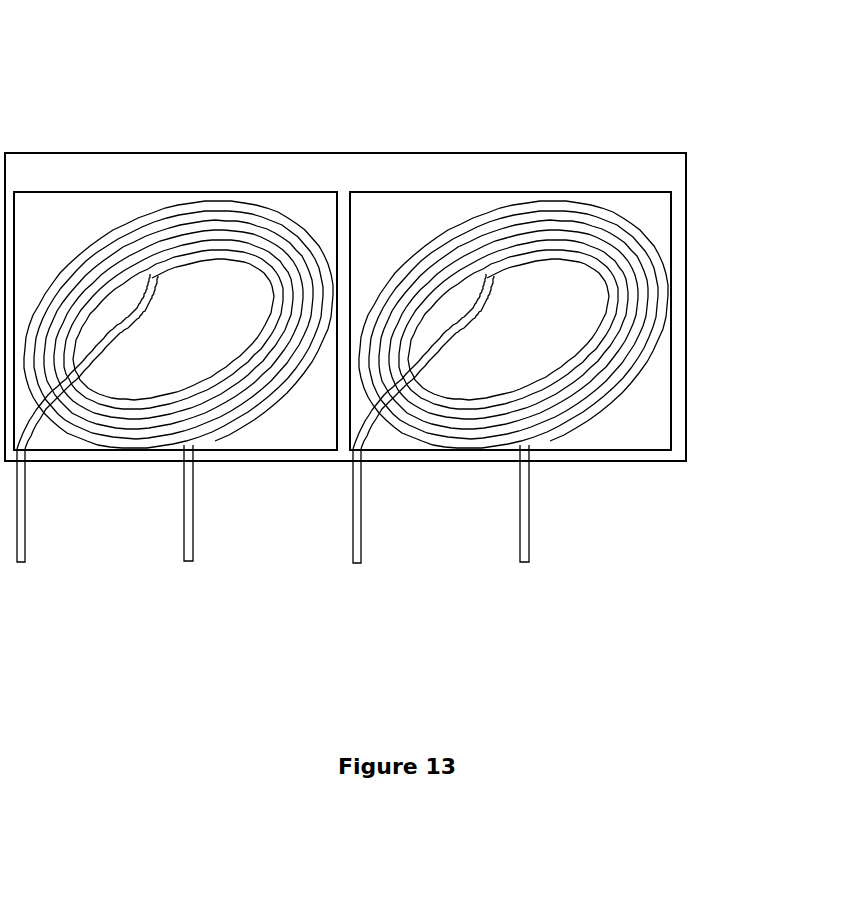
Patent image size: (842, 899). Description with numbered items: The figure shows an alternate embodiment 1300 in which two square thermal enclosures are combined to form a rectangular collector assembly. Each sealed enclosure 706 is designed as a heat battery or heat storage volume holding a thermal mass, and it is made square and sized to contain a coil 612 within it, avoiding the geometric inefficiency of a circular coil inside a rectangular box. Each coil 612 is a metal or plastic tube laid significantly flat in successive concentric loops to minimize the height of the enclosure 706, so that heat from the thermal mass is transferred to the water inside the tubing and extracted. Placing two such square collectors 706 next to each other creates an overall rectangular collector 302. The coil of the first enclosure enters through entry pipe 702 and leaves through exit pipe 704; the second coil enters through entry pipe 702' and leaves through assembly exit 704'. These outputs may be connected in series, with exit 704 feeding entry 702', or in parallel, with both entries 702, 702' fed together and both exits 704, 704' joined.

The alternate embodiment 1300 is at (430, 100).
The collector 302 is at (165, 147).
The enclosure 706 is at (413, 185).
The coil 612 is at (346, 369).
The entry pipe 702 is at (87, 481).
The exit pipe 704 is at (225, 577).
The entry pipe 702' is at (423, 487).
The assembly exit pipe 704' is at (565, 581).